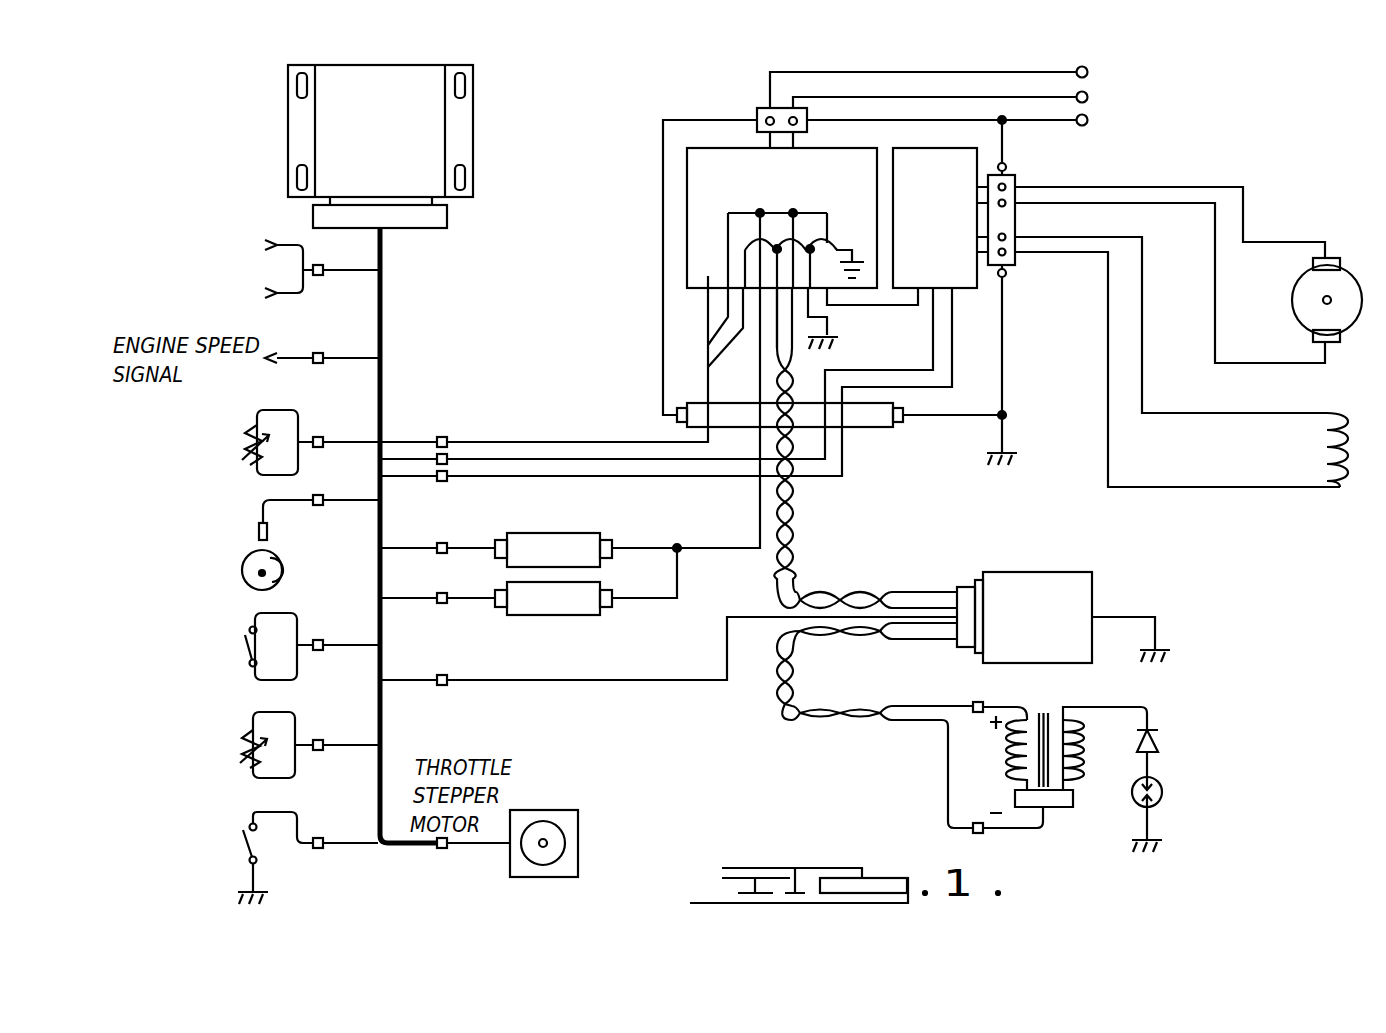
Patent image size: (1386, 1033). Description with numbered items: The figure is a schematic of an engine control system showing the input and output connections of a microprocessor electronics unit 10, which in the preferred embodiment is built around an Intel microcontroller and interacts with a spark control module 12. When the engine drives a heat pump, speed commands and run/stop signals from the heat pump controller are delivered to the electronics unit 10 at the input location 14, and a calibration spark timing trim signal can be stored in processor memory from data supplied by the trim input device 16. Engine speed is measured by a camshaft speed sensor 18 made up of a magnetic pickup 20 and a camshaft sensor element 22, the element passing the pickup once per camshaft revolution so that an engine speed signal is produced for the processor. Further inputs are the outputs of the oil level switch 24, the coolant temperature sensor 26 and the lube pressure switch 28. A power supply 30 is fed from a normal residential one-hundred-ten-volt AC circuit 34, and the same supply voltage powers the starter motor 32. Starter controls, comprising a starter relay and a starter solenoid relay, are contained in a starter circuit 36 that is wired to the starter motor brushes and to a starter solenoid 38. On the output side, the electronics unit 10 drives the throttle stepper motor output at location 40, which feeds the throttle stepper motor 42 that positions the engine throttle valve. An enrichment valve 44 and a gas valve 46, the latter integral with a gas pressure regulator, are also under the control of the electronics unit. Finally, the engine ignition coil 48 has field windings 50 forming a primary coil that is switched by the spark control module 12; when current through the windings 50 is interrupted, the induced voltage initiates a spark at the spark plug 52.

The microprocessor electronics unit (MEU) 10 is at (433, 128).
The spark control module 12 is at (1012, 572).
The speed command and run/stop signal input 14 is at (323, 274).
The trim input device 16 is at (320, 437).
The camshaft speed sensor 18 is at (282, 567).
The magnetic pickup 20 is at (258, 535).
The camshaft sensor element 22 is at (262, 548).
The oil level switch 24 is at (282, 633).
The coolant temperature sensor 26 is at (282, 735).
The lube pressure switch 28 is at (275, 825).
The power supply 30 is at (692, 202).
The starter motor 32 is at (1300, 312).
The 110-volt AC circuit 34 is at (765, 82).
The starter circuit 36 is at (960, 289).
The starter solenoid 38 is at (1327, 455).
The throttle stepper motor output 40 is at (442, 849).
The throttle stepper motor 42 is at (570, 822).
The enrichment valve 44 is at (583, 605).
The gas valve 46 is at (588, 542).
The engine ignition coil 48 is at (1087, 742).
The field windings 50 is at (1005, 780).
The spark plug 52 is at (1157, 803).